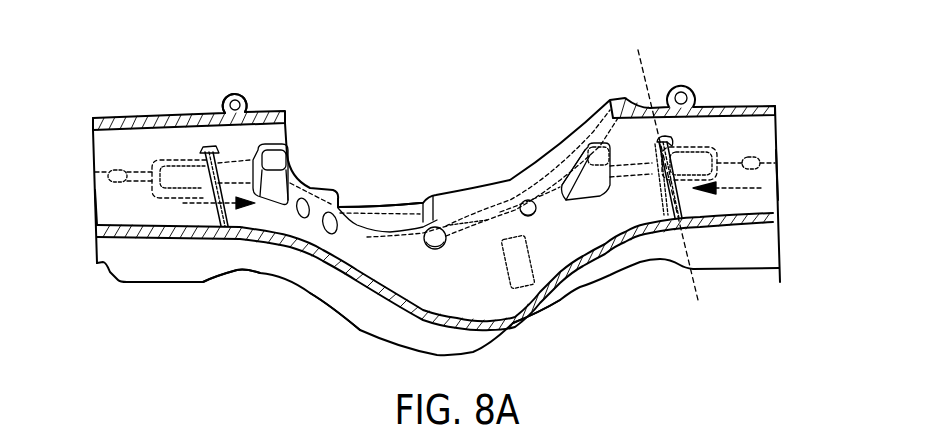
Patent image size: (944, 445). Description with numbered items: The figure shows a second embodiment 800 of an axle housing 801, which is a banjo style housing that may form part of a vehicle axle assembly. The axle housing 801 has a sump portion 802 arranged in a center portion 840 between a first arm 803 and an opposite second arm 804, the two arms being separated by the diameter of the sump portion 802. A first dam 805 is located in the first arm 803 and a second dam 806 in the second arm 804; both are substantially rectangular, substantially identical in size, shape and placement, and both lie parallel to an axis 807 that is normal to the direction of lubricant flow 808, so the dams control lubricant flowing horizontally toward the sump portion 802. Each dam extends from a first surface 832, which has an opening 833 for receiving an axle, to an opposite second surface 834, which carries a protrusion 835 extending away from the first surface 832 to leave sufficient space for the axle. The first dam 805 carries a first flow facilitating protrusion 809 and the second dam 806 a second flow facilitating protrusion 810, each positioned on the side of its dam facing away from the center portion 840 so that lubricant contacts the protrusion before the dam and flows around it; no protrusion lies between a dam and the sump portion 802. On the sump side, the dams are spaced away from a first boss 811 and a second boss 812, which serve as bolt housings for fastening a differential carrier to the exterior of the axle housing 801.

The second embodiment 800 is at (790, 82).
The axle housing 801 is at (105, 117).
The sump portion 802 is at (435, 291).
The first arm 803 is at (95, 203).
The second arm 804 is at (780, 180).
The first dam 805 is at (210, 147).
The second dam 806 is at (658, 185).
The axis 807 is at (641, 64).
The direction of lubricant flow 808 is at (203, 210).
The first flow facilitating protrusion 809 is at (170, 170).
The second flow facilitating protrusion 810 is at (697, 160).
The first boss 811 is at (276, 157).
The second boss 812 is at (577, 173).
The first surface 832 is at (268, 111).
The opening 833 is at (403, 181).
The second surface 834 is at (263, 274).
The protrusion 835 is at (360, 331).
The center portion 840 is at (549, 324).